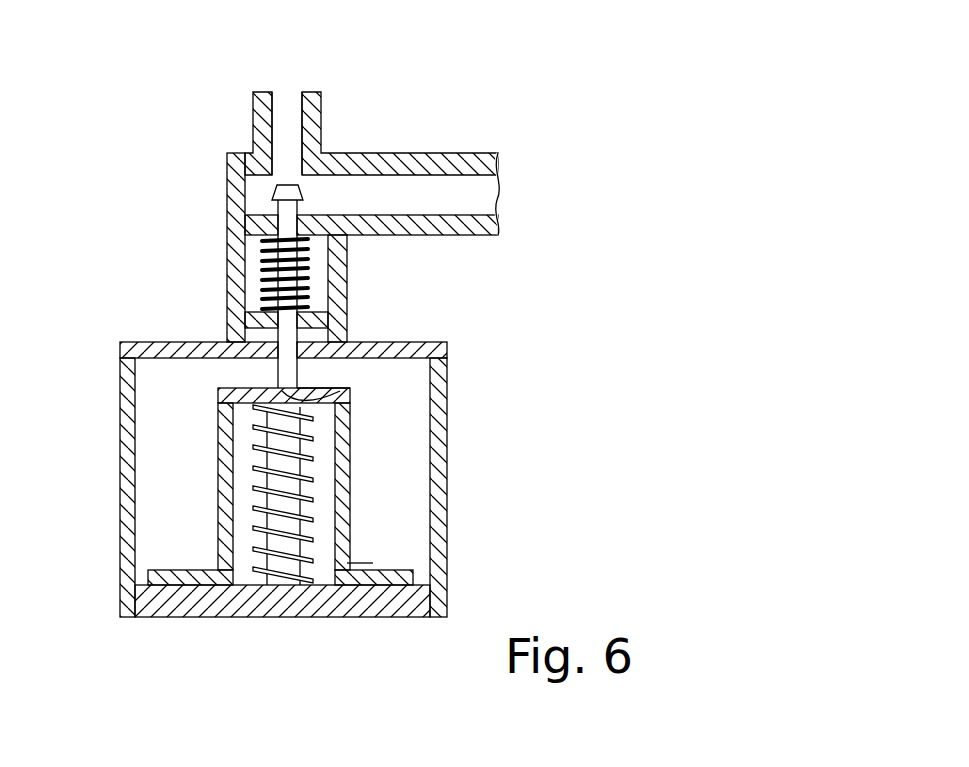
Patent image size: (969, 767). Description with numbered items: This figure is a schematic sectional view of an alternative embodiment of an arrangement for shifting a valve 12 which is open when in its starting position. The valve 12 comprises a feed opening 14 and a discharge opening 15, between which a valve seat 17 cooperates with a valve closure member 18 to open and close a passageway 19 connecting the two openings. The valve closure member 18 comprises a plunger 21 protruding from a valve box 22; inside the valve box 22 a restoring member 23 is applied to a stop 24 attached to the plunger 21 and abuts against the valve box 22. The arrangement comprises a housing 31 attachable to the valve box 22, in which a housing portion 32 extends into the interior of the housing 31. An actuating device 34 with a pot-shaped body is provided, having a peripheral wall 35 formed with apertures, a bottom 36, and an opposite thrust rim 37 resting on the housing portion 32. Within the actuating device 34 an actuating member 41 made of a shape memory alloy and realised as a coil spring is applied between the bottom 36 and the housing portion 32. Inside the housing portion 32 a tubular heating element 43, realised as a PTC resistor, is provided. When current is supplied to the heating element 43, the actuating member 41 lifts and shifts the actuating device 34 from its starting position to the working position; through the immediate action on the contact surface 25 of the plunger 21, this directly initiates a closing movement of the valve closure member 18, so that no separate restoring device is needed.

The valve 12 is at (297, 270).
The feed opening 14 is at (285, 107).
The discharge opening 15 is at (473, 202).
The valve seat 17 is at (303, 180).
The valve closure member 18 is at (272, 196).
The passageway 19 is at (287, 167).
The plunger 21 is at (285, 226).
The valve box 22 is at (205, 278).
The restoring member 23 is at (300, 290).
The stop 24 is at (232, 322).
The contact surface 25 is at (317, 385).
The housing 31 is at (223, 517).
The housing portion 32 is at (177, 600).
The actuating device 34 is at (356, 438).
The peripheral wall 35 is at (340, 533).
The bottom 36 is at (348, 388).
The thrust rim 37 is at (137, 573).
The actuating member 41 is at (334, 460).
The heating element 43 is at (243, 482).